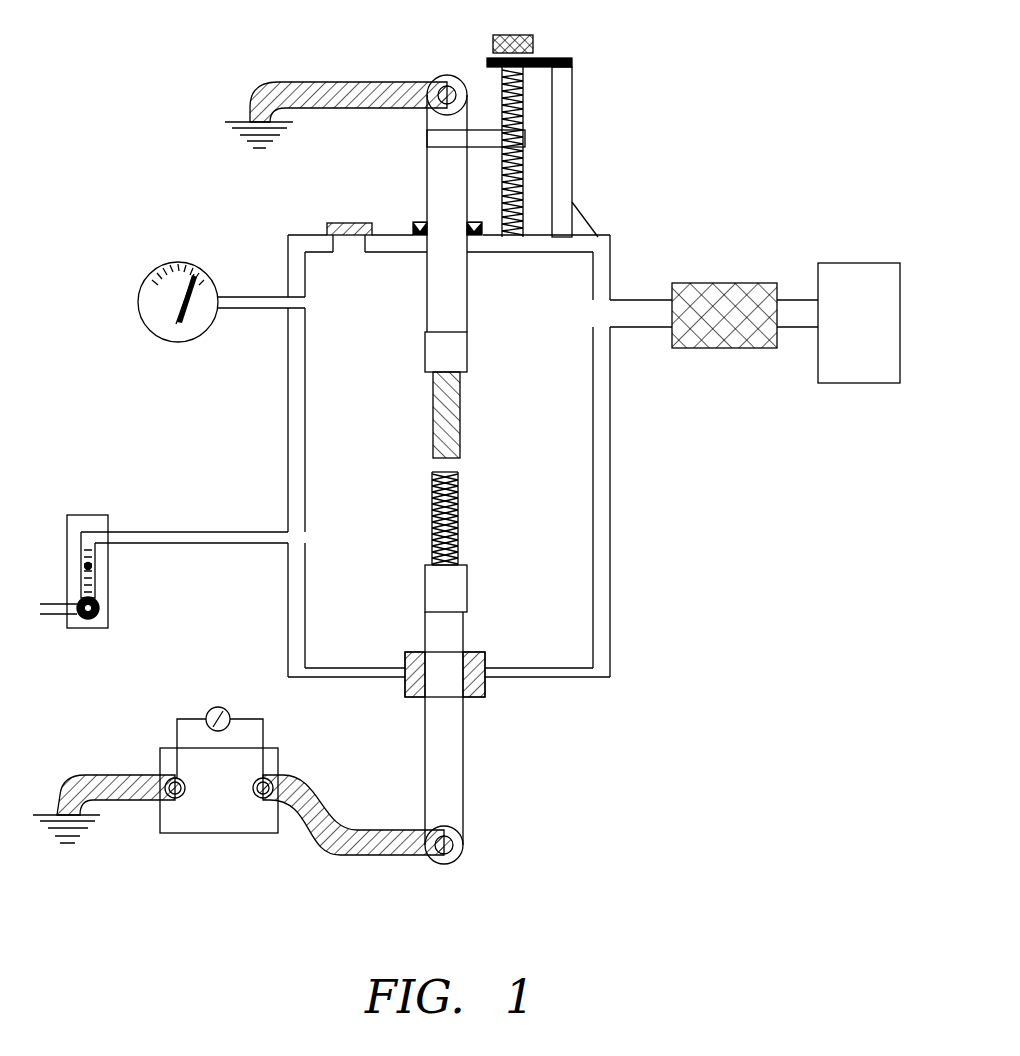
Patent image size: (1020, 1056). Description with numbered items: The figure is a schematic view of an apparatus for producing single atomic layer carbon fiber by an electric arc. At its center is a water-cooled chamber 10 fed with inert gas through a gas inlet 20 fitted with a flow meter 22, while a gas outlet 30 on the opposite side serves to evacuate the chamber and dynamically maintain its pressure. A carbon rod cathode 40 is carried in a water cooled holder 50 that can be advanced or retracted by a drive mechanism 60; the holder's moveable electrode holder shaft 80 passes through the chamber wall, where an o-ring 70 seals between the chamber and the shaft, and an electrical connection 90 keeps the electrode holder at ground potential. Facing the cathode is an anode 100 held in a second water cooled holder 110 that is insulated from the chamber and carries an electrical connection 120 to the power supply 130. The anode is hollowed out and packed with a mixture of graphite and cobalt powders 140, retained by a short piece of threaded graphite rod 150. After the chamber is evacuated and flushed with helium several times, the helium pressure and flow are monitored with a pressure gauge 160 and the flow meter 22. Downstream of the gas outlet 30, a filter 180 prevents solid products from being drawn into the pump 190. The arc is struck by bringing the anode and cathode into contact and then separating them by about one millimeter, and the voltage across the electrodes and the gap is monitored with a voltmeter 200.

The water-cooled chamber 10 is at (613, 565).
The gas inlet 20 is at (226, 531).
The flow meter 22 is at (90, 513).
The gas outlet 30 is at (636, 330).
The carbon rod cathode 40 is at (460, 410).
The water cooled holder 50 is at (467, 345).
The drive mechanism 60 is at (580, 62).
The o-ring 70 is at (418, 240).
The electrode holder shaft 80 is at (427, 193).
The electrical connection 90 is at (447, 75).
The anode 100 is at (458, 500).
The water cooled holder 110 is at (467, 606).
The electrical connection 120 is at (462, 857).
The power supply 130 is at (228, 835).
The mixture of graphite and cobalt powders 140 is at (432, 522).
The threaded graphite rod 150 is at (432, 482).
The pressure gauge 160 is at (138, 302).
The filter 180 is at (757, 350).
The pump 190 is at (855, 262).
The voltmeter 200 is at (230, 706).